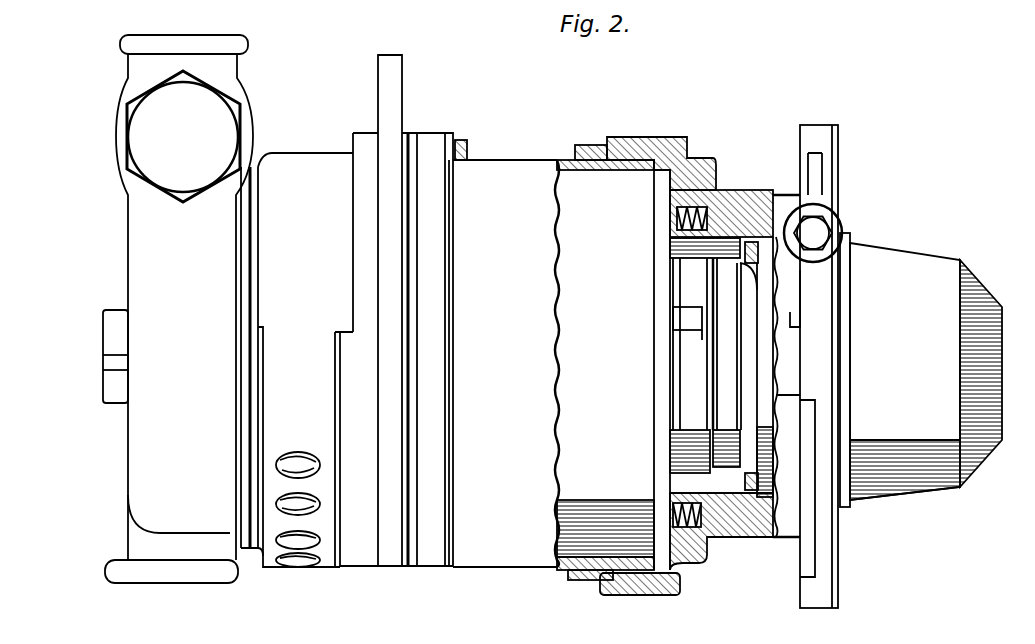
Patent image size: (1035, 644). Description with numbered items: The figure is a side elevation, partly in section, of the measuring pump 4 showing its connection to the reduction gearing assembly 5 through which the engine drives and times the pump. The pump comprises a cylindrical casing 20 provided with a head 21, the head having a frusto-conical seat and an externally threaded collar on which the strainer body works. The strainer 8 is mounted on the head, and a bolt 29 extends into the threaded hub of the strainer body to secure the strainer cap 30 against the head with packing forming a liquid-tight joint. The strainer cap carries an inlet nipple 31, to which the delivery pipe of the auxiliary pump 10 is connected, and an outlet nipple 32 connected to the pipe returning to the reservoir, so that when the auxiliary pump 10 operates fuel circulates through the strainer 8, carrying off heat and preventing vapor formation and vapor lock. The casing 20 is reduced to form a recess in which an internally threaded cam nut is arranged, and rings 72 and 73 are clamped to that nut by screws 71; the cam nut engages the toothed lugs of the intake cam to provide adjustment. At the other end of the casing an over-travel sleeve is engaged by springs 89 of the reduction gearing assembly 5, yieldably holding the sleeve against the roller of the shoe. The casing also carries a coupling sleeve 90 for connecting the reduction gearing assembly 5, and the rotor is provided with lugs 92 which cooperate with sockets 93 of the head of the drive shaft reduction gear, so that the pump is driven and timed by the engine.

The measuring pump 4 is at (566, 162).
The reduction gearing assembly 5 is at (809, 366).
The strainer 8 is at (184, 306).
The auxiliary pump 10 is at (396, 349).
The cylindrical casing 20 is at (400, 360).
The head 21 is at (312, 572).
The bolt 29 is at (110, 315).
The strainer cap 30 is at (183, 136).
The inlet nipple 31 is at (171, 560).
The outlet nipple 32 is at (137, 73).
The screws 71 is at (468, 147).
The ring 72 is at (455, 198).
The ring 73 is at (393, 65).
The springs 89 is at (710, 215).
The coupling sleeve 90 is at (667, 140).
The lugs 92 is at (673, 322).
The sockets 93 is at (705, 335).